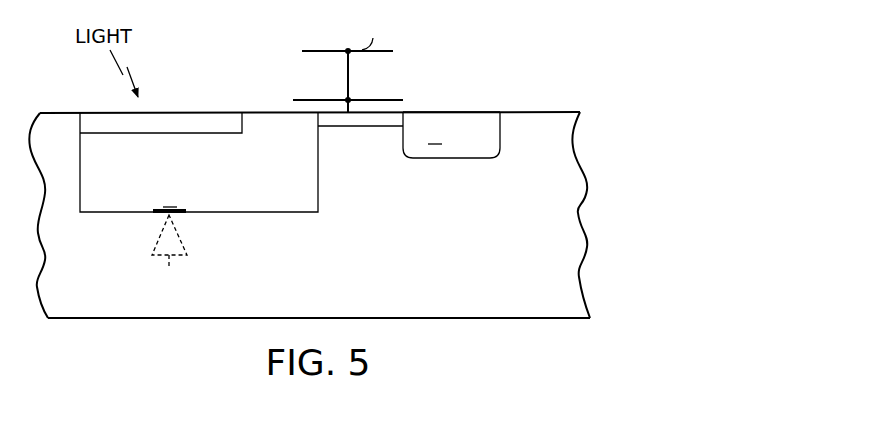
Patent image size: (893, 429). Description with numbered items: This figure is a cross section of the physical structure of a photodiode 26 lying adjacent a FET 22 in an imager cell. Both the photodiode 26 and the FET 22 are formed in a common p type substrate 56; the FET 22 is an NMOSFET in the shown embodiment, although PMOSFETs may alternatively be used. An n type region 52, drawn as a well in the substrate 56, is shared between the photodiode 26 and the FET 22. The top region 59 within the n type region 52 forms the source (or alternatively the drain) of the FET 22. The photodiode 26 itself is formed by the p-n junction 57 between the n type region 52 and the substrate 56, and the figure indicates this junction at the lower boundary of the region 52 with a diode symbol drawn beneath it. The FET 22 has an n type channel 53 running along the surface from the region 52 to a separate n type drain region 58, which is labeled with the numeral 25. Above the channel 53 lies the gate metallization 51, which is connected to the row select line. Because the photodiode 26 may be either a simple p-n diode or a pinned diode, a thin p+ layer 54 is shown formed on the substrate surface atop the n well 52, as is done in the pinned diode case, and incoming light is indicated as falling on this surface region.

The FET 22 is at (420, 100).
The n-type region / drain 25 is at (482, 117).
The photodiode 26 is at (153, 238).
The gate metallization 51 is at (310, 99).
The n type region 52 is at (116, 191).
The n type channel 53 is at (337, 120).
The thin p+ layer 54 is at (117, 123).
The p type substrate 56 is at (316, 288).
The p-n junction 57 is at (193, 215).
The drain region 58 is at (480, 154).
The top region 59 is at (293, 131).